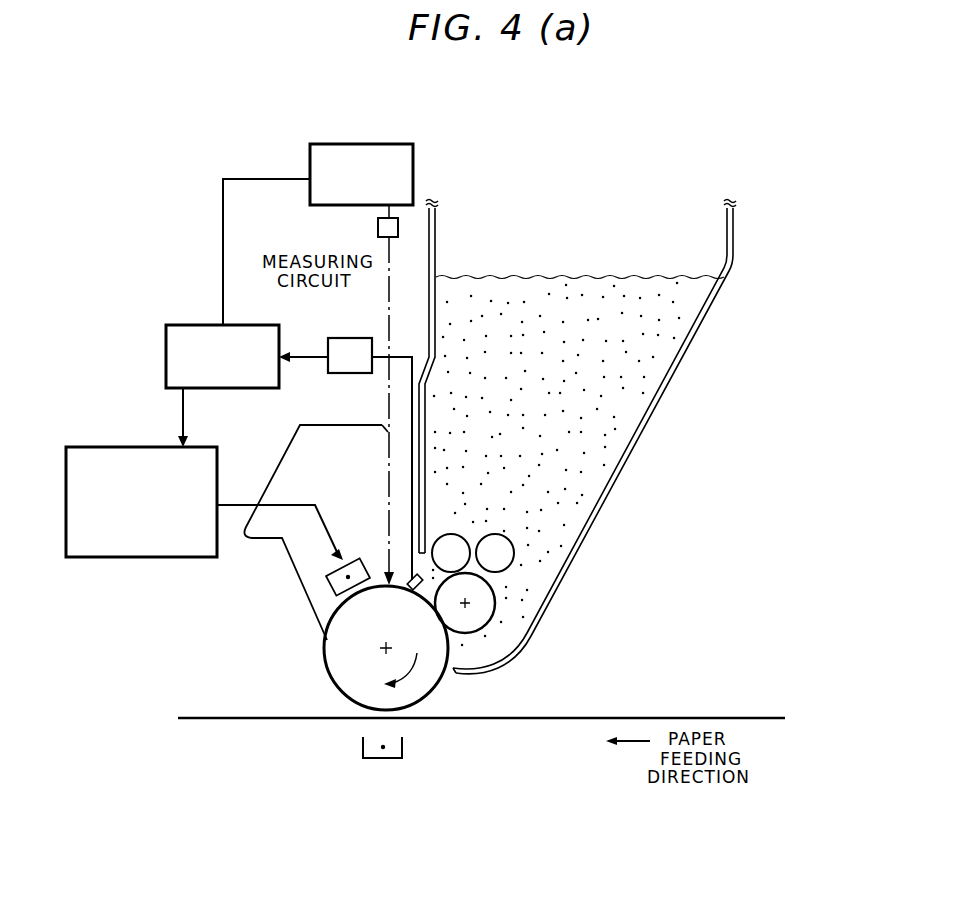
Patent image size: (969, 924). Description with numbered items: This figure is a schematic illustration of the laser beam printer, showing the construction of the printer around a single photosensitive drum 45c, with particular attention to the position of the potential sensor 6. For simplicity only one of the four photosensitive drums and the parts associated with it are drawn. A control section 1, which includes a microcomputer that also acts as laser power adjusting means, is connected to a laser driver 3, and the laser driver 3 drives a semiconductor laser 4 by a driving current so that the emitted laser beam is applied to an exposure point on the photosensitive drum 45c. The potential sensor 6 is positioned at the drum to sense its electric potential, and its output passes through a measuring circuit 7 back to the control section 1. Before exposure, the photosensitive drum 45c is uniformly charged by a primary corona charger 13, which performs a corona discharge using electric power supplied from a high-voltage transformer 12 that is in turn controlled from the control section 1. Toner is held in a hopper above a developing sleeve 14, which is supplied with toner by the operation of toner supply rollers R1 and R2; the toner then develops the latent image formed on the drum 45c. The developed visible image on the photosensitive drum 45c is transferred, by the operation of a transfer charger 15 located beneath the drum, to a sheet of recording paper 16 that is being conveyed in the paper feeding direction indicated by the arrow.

The control section 1 is at (183, 325).
The laser driver 3 is at (413, 158).
The semiconductor laser 4 is at (398, 230).
The potential sensor 6 is at (408, 585).
The measuring circuit 7 is at (344, 338).
The high-voltage transformer 12 is at (158, 557).
The primary corona charger 13 is at (332, 571).
The developing sleeve 14 is at (478, 630).
The transfer charger 15 is at (403, 748).
The recording paper 16 is at (729, 716).
The photosensitive drum 45c is at (330, 672).
The toner supply roller R1 is at (451, 553).
The toner supply roller R2 is at (495, 553).